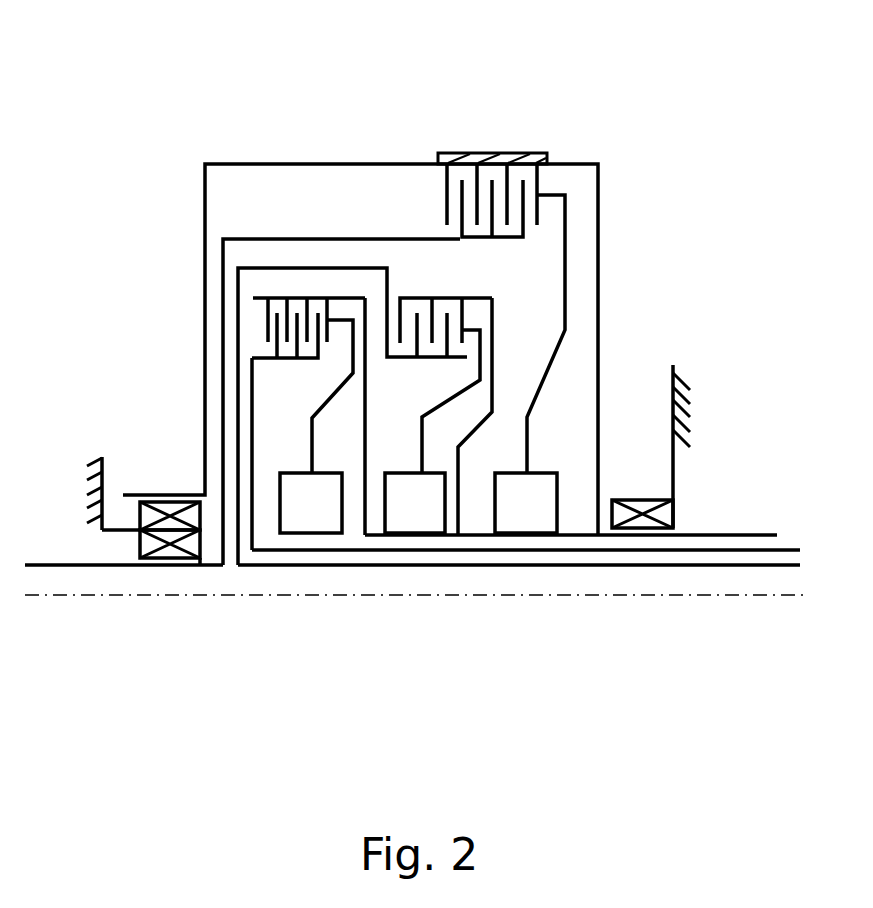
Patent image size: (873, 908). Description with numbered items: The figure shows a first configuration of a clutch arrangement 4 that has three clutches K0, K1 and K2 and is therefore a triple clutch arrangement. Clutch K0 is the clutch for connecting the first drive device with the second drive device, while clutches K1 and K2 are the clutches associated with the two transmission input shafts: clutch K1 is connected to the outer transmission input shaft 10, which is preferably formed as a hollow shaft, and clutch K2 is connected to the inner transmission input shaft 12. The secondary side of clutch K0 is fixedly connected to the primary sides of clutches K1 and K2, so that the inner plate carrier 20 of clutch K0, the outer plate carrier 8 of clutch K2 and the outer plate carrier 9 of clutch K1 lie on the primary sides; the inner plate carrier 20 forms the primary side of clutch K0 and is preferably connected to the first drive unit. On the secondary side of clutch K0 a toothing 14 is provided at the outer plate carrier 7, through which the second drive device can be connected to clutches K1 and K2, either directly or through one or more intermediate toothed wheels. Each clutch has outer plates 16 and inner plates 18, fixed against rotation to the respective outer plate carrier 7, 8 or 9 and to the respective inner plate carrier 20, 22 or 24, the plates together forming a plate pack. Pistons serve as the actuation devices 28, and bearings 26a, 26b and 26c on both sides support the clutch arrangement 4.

The clutch arrangement 4 is at (677, 122).
The outer plate carrier 7 is at (600, 192).
The outer plate carrier 8 is at (495, 347).
The outer plate carrier 9 is at (366, 405).
The outer transmission input shaft 10 is at (643, 562).
The inner transmission input shaft 12 is at (553, 552).
The toothing 14 is at (462, 150).
The outer plates 16 is at (443, 215).
The inner plates 18 is at (447, 313).
The inner plate carrier 20 is at (247, 238).
The inner plate carrier 22 is at (400, 360).
The inner plate carrier 24 is at (257, 412).
The bearing 26a is at (663, 514).
The bearing 26b is at (162, 500).
The bearing 26c is at (168, 556).
The actuation devices 28 is at (330, 397).
The clutch K0 is at (407, 376).
The clutch K1 is at (236, 483).
The clutch K2 is at (470, 491).